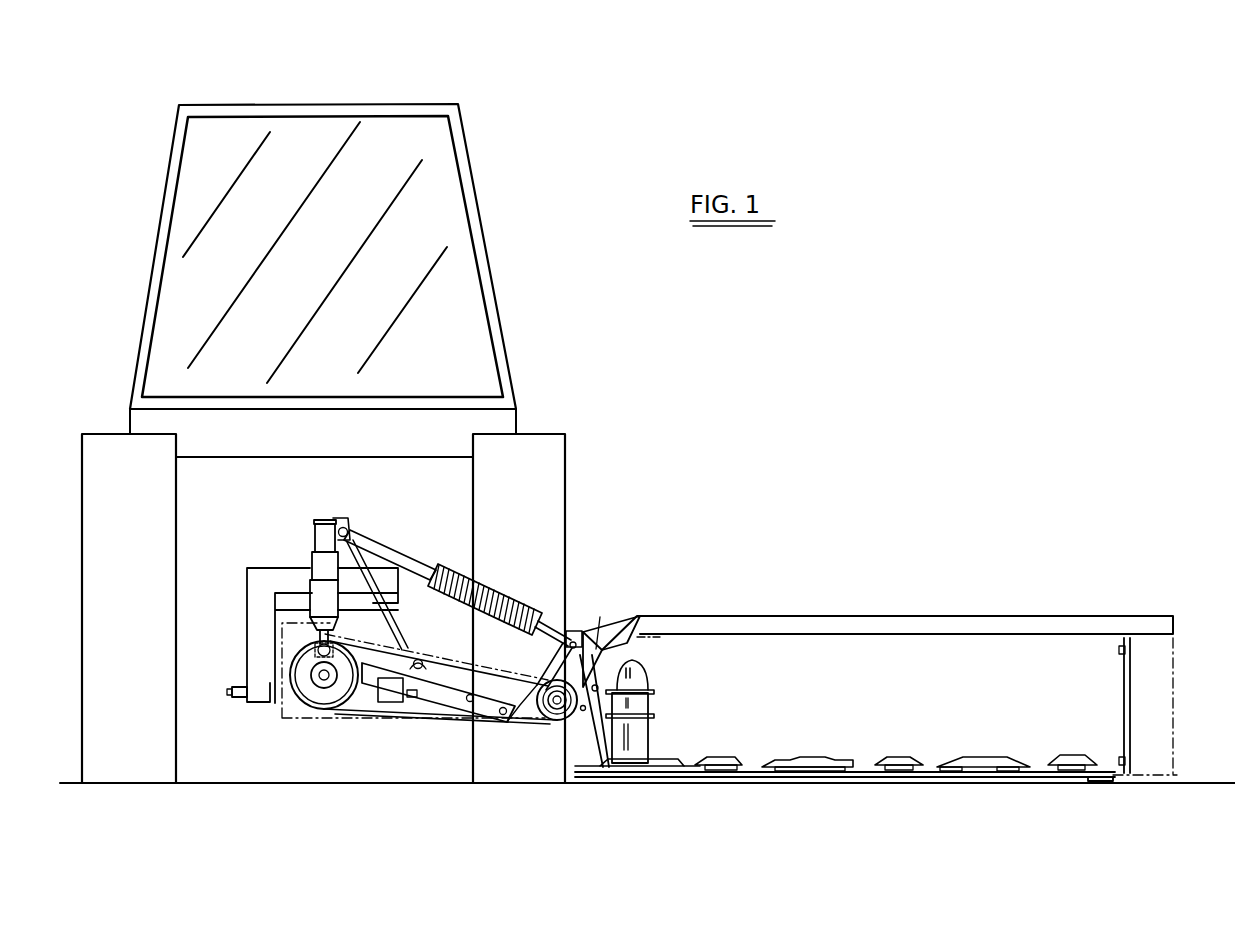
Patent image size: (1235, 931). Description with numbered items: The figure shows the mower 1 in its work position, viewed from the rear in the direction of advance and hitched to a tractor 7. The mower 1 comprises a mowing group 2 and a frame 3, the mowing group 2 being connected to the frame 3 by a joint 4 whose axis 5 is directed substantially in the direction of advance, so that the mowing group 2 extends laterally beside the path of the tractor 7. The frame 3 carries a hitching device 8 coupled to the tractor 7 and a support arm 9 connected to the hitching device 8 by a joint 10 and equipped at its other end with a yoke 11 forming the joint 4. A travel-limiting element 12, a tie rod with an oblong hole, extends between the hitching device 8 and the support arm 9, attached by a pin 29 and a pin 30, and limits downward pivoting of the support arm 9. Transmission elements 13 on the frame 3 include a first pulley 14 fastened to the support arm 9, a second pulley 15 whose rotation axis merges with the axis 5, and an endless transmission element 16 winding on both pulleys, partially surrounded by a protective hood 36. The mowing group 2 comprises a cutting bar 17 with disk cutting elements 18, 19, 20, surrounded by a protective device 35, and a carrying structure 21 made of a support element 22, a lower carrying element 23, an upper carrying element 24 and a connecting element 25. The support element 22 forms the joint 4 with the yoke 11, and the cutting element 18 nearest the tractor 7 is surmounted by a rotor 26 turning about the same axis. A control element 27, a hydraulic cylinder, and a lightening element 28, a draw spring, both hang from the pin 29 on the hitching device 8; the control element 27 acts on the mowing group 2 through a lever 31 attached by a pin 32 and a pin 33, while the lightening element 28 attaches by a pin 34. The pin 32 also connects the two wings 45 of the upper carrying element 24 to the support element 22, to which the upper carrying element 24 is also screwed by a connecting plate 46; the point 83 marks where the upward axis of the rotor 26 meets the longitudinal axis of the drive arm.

The mower 1 is at (751, 520).
The mowing group 2 is at (799, 786).
The frame 3 is at (342, 727).
The joint 4 is at (528, 733).
The axis 5 is at (550, 702).
The tractor 7 is at (472, 214).
The hitching device 8 is at (257, 577).
The support arm 9 is at (430, 690).
The joint 10 is at (292, 653).
The yoke 11 is at (482, 703).
The travel-limiting element 12 is at (405, 638).
The transmission elements 13 is at (368, 727).
The first pulley 14 is at (317, 692).
The second pulley 15 is at (557, 713).
The endless transmission element 16 is at (402, 723).
The cutting bar 17 is at (870, 768).
The cutting element 18 is at (658, 762).
The cutting element 19 is at (792, 760).
The cutting element 20 is at (1077, 760).
The carrying structure 21 is at (962, 613).
The support element 22 is at (585, 740).
The lower carrying element 23 is at (1110, 777).
The upper carrying element 24 is at (795, 615).
The connecting element 25 is at (1124, 686).
The rotor 26 is at (648, 704).
The control element 27 is at (442, 568).
The lightening element 28 is at (490, 588).
The pin 29 is at (345, 529).
The pin 30 is at (424, 662).
The lever 31 is at (595, 635).
The pin 32 is at (652, 711).
The pin 33 is at (584, 632).
The pin 34 is at (550, 627).
The protective device 35 is at (1177, 683).
The protective hood 36 is at (282, 711).
The wings 45 is at (617, 637).
The connecting plate 46 is at (557, 667).
The point 83 is at (631, 655).